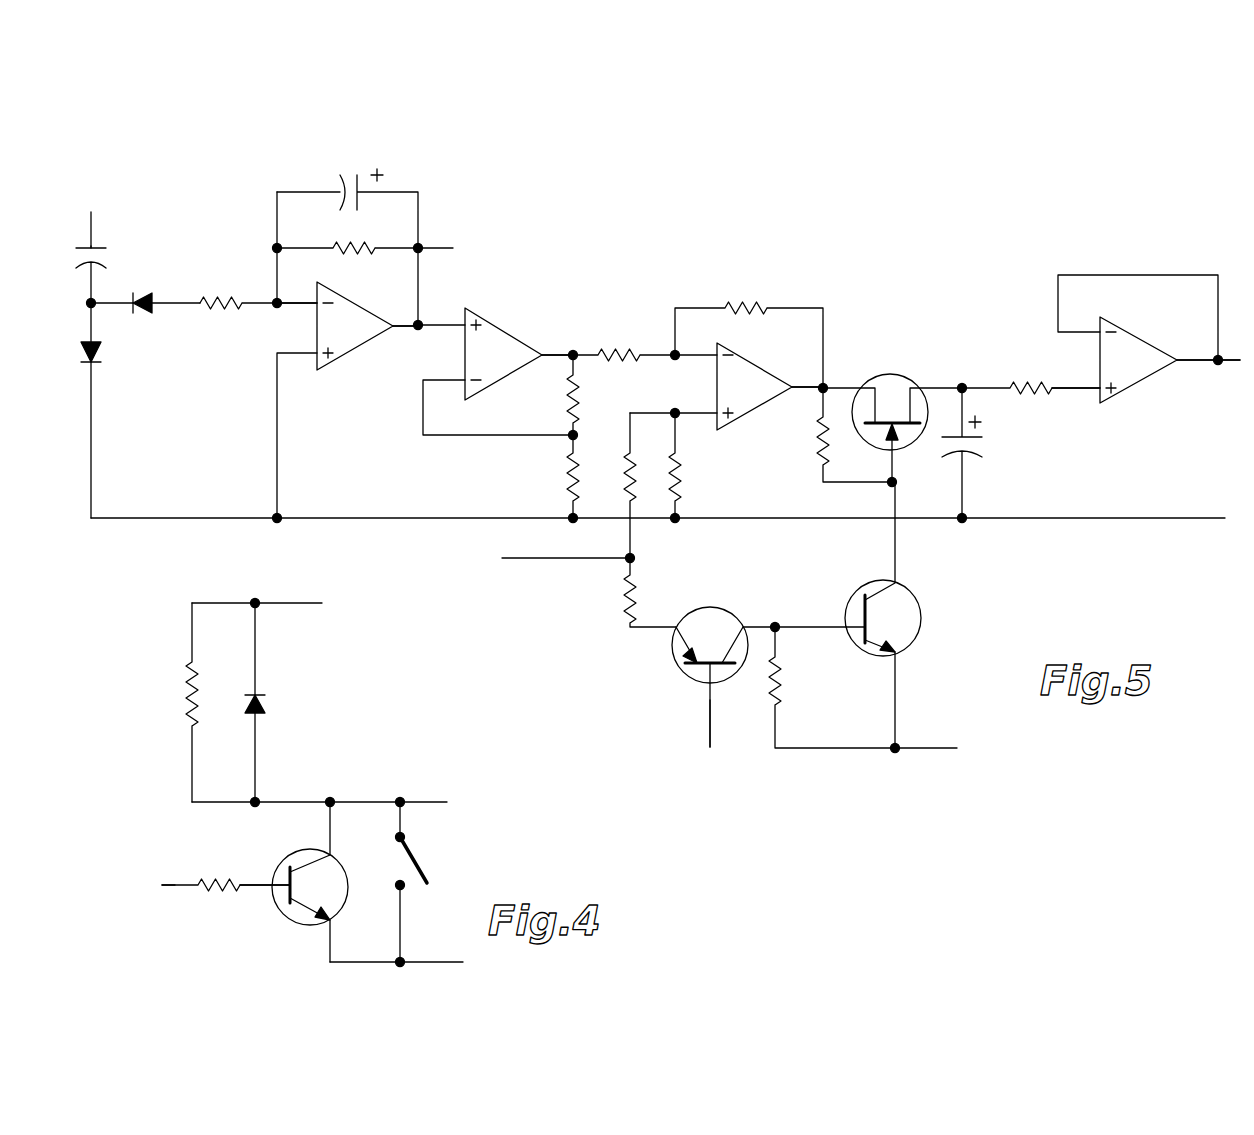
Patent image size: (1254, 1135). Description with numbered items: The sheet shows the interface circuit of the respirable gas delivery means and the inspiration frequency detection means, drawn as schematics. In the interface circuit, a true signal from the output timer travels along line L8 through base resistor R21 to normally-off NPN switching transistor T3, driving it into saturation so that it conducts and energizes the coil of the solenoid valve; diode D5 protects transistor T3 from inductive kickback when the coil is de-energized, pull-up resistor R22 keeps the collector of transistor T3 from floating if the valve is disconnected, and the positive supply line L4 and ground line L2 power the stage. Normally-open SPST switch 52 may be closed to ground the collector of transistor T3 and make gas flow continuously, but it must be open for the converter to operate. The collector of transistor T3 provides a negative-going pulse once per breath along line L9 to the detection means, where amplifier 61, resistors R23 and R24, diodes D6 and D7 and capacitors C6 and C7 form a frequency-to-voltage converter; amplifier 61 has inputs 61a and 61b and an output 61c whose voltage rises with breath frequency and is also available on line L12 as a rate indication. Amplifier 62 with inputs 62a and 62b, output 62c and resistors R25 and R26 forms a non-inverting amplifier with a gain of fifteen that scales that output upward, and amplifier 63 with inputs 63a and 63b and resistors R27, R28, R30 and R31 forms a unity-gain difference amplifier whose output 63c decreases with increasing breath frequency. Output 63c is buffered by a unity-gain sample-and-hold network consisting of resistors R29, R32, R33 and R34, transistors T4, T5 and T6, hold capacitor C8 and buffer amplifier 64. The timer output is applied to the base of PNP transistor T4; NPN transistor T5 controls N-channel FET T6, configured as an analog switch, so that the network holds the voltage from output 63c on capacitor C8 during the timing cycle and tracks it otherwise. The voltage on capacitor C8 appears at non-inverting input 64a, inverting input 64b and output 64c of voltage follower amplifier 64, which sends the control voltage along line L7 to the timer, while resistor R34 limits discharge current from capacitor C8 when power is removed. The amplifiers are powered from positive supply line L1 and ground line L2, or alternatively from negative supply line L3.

In FIG. 5, the amplifier 61 is at (360, 313).
In FIG. 5, the inverting input of amplifier 61 61a is at (298, 292).
In FIG. 5, the non-inverting input of amplifier 61 61b is at (297, 425).
In FIG. 5, the output of amplifier 61 61c is at (404, 339).
In FIG. 5, the amplifier 62 is at (500, 330).
In FIG. 5, the non-inverting input of amplifier 62 62a is at (441, 313).
In FIG. 5, the inverting input of amplifier 62 62b is at (498, 407).
In FIG. 5, the output of amplifier 62 62c is at (555, 366).
In FIG. 5, the amplifier 63 is at (748, 362).
In FIG. 5, the inverting input of amplifier 63 63a is at (696, 366).
In FIG. 5, the non-inverting input of amplifier 63 63b is at (673, 425).
In FIG. 5, the output of amplifier 63 63c is at (804, 399).
In FIG. 5, the buffer amplifier 64 is at (1128, 340).
In FIG. 5, the non-inverting input of amplifier 64 64a is at (1076, 379).
In FIG. 5, the inverting input of amplifier 64 64b is at (1138, 317).
In FIG. 5, the output of amplifier 64 64c is at (1195, 347).
In FIG. 4, the normally-open SPST switch 52 is at (418, 860).
In FIG. 4, the base resistor R21 is at (226, 872).
In FIG. 4, the pull-up resistor R22 is at (168, 702).
In FIG. 5, the resistor R23 is at (258, 292).
In FIG. 5, the resistor R24 is at (347, 259).
In FIG. 5, the resistor R25 is at (594, 395).
In FIG. 5, the resistor R26 is at (551, 476).
In FIG. 5, the resistor R27 is at (624, 342).
In FIG. 5, the resistor R28 is at (611, 485).
In FIG. 5, the resistor R29 is at (650, 592).
In FIG. 5, the resistor R30 is at (696, 465).
In FIG. 5, the resistor R31 is at (749, 335).
In FIG. 5, the resistor R32 is at (834, 435).
In FIG. 5, the resistor R33 is at (832, 687).
In FIG. 5, the resistor R34 is at (1031, 375).
In FIG. 5, the capacitor C6 is at (105, 274).
In FIG. 5, the capacitor C7 is at (347, 234).
In FIG. 5, the hold capacitor C8 is at (976, 453).
In FIG. 4, the diode D5 is at (270, 702).
In FIG. 5, the diode D6 is at (107, 410).
In FIG. 5, the diode D7 is at (145, 290).
In FIG. 4, the NPN switching transistor T3 is at (295, 882).
In FIG. 5, the PNP switching transistor T4 is at (717, 662).
In FIG. 5, the NPN switching transistor T5 is at (848, 615).
In FIG. 5, the N-channel FET T6 is at (892, 413).
In FIG. 5, the line L1 is at (566, 570).
In FIG. 5, the line L2 is at (658, 532).
In FIG. 4, the line L2 is at (408, 961).
In FIG. 5, the line L3 is at (939, 751).
In FIG. 4, the line L4 is at (270, 603).
In FIG. 5, the line L7 is at (1231, 373).
In FIG. 4, the line L8 is at (157, 897).
In FIG. 5, the line L9 is at (393, 471).
In FIG. 4, the line L9 is at (332, 801).
In FIG. 5, the line L12 is at (453, 243).